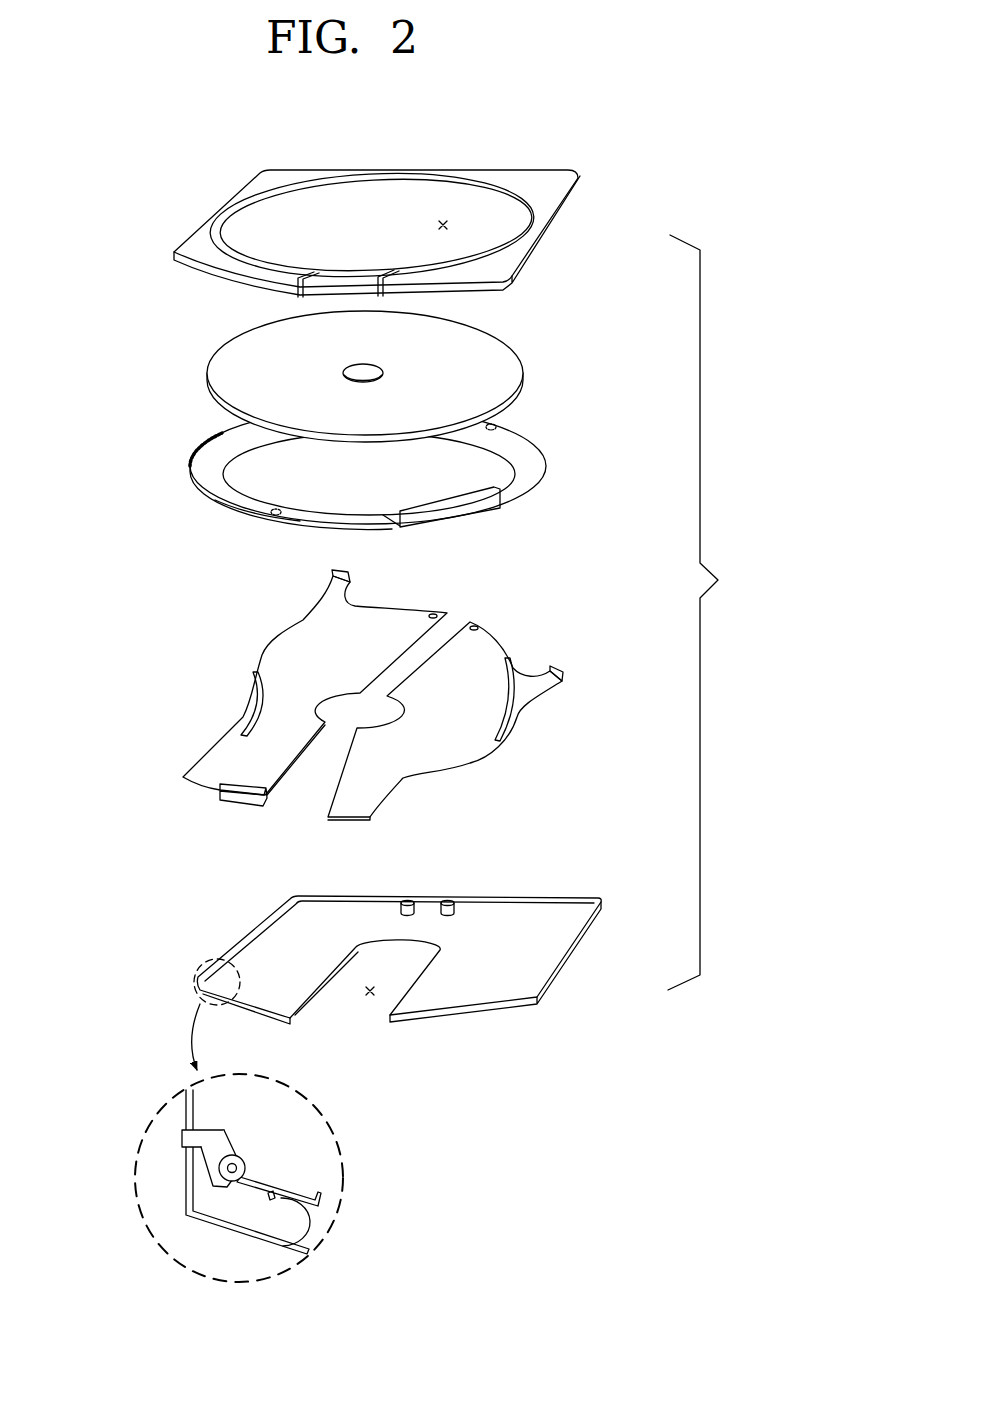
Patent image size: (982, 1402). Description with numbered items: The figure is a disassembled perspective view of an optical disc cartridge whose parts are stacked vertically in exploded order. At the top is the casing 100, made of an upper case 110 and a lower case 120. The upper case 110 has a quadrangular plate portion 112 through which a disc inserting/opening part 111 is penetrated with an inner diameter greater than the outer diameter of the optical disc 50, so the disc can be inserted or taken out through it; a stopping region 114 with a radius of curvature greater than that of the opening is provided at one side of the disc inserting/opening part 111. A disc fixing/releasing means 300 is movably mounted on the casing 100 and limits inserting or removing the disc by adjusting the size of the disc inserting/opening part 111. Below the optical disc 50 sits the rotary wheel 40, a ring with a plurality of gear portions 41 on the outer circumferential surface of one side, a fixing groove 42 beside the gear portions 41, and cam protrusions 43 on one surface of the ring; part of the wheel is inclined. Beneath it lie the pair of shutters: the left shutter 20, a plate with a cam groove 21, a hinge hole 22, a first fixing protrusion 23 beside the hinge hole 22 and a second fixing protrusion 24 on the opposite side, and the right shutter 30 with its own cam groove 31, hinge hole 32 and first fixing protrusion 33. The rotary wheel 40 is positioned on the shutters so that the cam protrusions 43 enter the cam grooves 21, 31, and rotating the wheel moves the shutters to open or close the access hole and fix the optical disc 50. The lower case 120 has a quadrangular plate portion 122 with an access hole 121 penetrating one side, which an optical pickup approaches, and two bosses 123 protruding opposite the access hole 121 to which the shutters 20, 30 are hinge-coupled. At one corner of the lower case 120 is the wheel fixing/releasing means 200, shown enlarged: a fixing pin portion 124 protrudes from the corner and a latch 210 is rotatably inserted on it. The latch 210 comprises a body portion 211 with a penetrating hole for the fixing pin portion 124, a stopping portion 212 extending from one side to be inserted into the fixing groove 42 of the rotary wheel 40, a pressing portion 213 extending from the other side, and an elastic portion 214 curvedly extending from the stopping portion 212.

The casing 100 is at (725, 612).
The upper case 110 is at (383, 213).
The disc inserting/opening part 111 is at (443, 220).
The plate portion 112 is at (273, 180).
The stopping region 114 is at (388, 172).
The disc fixing/releasing means 300 is at (320, 299).
The optical disc 50 is at (532, 367).
The rotary wheel 40 is at (374, 488).
The gear portions 41 is at (195, 449).
The fixing groove 42 is at (230, 507).
The cam protrusions 43 is at (500, 428).
The left shutter 20 is at (297, 672).
The cam groove 21 is at (255, 680).
The hinge hole 22 is at (434, 612).
The first fixing protrusion 23 is at (333, 572).
The second fixing protrusion 24 is at (237, 788).
The right shutter 30 is at (470, 690).
The cam groove 31 is at (533, 705).
The hinge hole 32 is at (475, 626).
The first fixing protrusion 33 is at (557, 664).
The lower case 120 is at (441, 1001).
The access hole 121 is at (372, 997).
The plate portion 122 is at (493, 983).
The bosses 123 is at (451, 899).
The fixing pin portion 124 is at (228, 1168).
The wheel fixing/releasing means 200 is at (237, 1120).
The latch 210 is at (245, 1134).
The body portion 211 is at (242, 1166).
The stopping portion 212 is at (322, 1198).
The pressing portion 213 is at (182, 1138).
The elastic portion 214 is at (310, 1225).